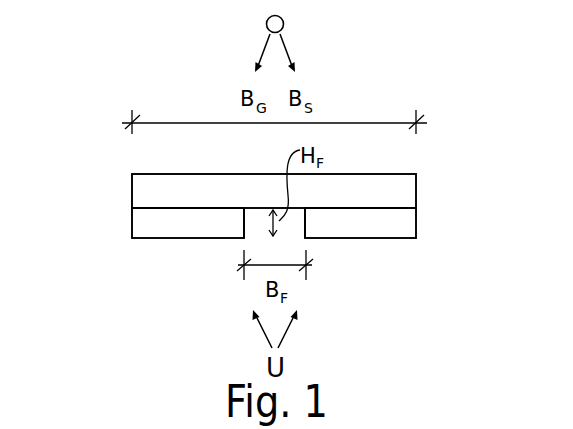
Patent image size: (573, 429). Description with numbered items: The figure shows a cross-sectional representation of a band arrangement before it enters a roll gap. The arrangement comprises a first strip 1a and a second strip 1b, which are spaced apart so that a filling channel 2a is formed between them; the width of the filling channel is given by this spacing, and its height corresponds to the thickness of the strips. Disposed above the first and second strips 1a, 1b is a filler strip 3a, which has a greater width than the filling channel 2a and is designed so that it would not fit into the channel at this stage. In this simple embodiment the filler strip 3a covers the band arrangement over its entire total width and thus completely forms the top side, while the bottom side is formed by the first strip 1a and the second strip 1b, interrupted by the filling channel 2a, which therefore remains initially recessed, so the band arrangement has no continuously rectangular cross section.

The first strip 1a is at (148, 225).
The second strip 1b is at (398, 225).
The filling channel 2a is at (297, 220).
The filler strip 3a is at (398, 190).